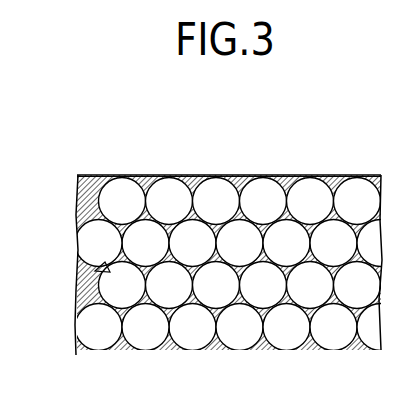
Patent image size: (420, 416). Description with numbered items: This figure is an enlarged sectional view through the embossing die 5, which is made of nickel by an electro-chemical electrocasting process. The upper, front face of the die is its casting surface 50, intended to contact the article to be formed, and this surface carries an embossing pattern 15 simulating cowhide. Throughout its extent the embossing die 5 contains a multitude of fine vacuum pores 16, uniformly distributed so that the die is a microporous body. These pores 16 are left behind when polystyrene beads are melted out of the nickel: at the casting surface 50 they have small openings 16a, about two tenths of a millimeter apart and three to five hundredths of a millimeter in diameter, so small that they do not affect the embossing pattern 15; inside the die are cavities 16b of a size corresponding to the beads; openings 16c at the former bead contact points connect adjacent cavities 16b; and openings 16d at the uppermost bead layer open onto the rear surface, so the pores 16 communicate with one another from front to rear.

The embossing die 5 is at (74, 208).
The embossing pattern 15 is at (232, 181).
The casting surface 50 is at (283, 180).
The fine vacuum pores 16 is at (76, 318).
The openings 16a is at (126, 180).
The cavities 16b is at (100, 243).
The openings 16c is at (104, 270).
The openings 16d is at (142, 347).